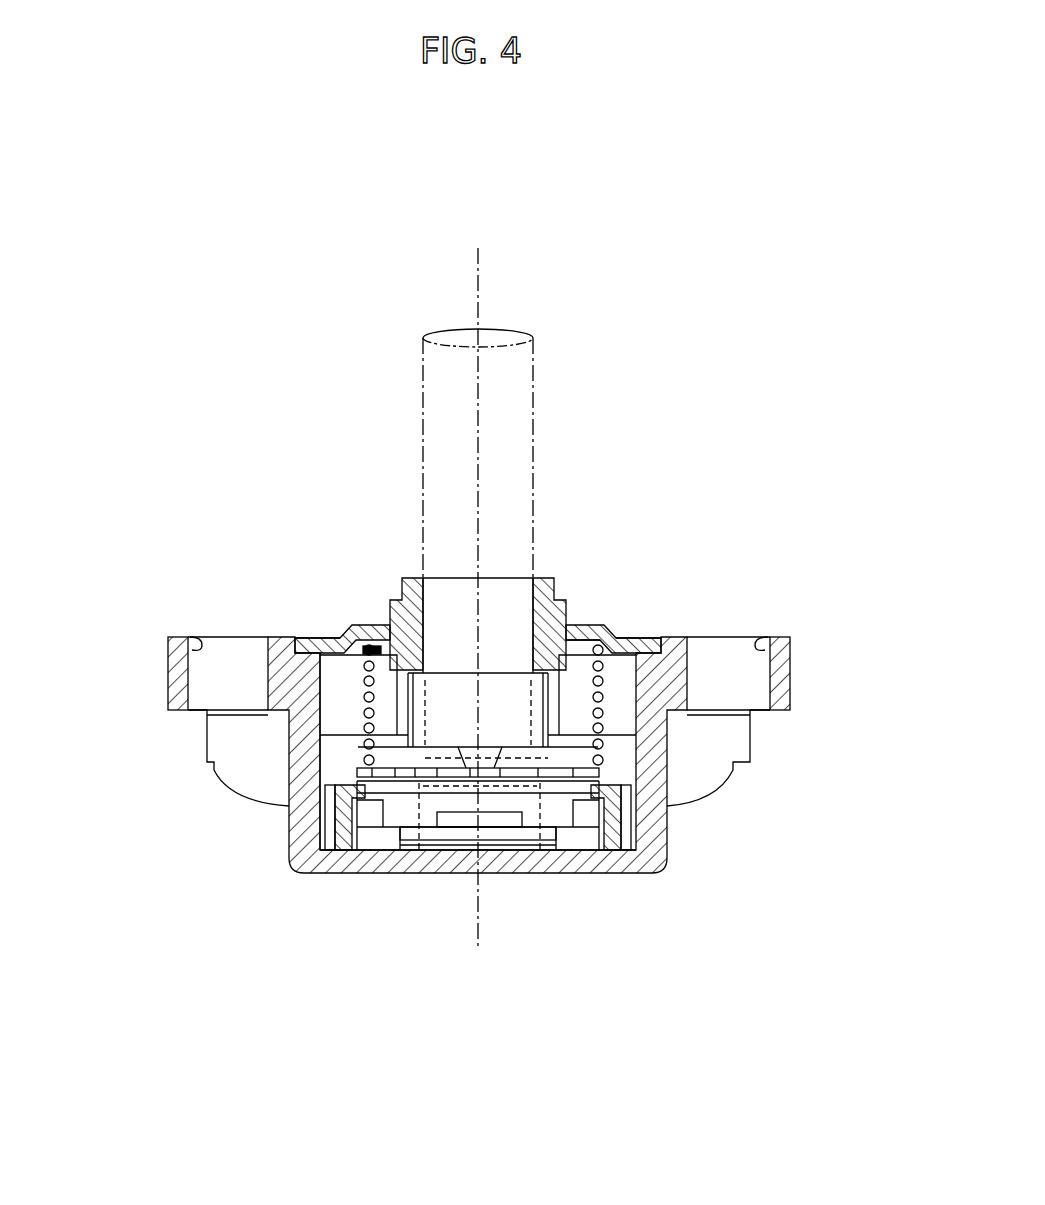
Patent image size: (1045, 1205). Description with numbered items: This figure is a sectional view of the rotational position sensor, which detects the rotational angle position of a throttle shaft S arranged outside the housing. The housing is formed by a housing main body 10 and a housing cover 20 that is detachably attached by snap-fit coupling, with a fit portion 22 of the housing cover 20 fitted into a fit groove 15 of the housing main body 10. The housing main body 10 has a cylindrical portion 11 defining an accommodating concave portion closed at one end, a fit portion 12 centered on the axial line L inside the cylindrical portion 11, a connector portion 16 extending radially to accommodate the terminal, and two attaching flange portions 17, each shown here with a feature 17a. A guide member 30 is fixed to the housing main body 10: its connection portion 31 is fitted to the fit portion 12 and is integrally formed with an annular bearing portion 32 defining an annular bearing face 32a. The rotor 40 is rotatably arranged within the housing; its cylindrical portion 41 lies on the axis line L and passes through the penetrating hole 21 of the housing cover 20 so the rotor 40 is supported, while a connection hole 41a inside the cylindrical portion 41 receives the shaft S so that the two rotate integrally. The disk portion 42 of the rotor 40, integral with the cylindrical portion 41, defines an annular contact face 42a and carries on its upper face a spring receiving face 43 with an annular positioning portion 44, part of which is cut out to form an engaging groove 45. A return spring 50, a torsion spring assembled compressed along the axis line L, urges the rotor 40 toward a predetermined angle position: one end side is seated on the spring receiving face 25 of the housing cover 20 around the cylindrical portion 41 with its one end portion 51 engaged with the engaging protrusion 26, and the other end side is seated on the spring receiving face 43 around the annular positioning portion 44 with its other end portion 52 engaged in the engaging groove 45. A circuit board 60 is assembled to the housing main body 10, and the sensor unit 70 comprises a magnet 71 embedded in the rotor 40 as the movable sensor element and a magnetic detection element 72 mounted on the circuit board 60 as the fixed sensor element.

The axial line L is at (478, 272).
The throttle shaft S is at (538, 357).
The housing main body 10 is at (596, 874).
The cylindrical portion 11 is at (300, 855).
The fit portion 12 is at (322, 848).
The fit groove 15 is at (667, 737).
The connector portion 16 is at (223, 782).
The attaching flange portion 17 is at (168, 655).
The engagement groove 17a is at (192, 637).
The housing cover 20 is at (574, 598).
The penetrating hole 21 is at (515, 585).
The fit portion 22 is at (672, 638).
The spring receiving face 25 is at (568, 642).
The engaging protrusion 26 is at (342, 638).
The guide member 30 is at (626, 779).
The connection portion 31 is at (357, 802).
The annular bearing portion 32 is at (330, 795).
The annular bearing face 32a is at (367, 788).
The rotor 40 is at (588, 660).
The cylindrical portion 41 is at (415, 695).
The connection hole 41a is at (437, 600).
The disk portion 42 is at (358, 768).
The annular contact face 42a is at (640, 797).
The spring receiving face 43 is at (588, 756).
The annular positioning portion 44 is at (522, 745).
The engaging groove 45 is at (467, 768).
The return spring 50 is at (366, 655).
The one end portion 51 is at (359, 665).
The other end portion 52 is at (419, 850).
The circuit board 60 is at (461, 845).
The sensor unit 70 is at (495, 954).
The magnet 71 is at (540, 850).
The magnetic detection element 72 is at (500, 828).